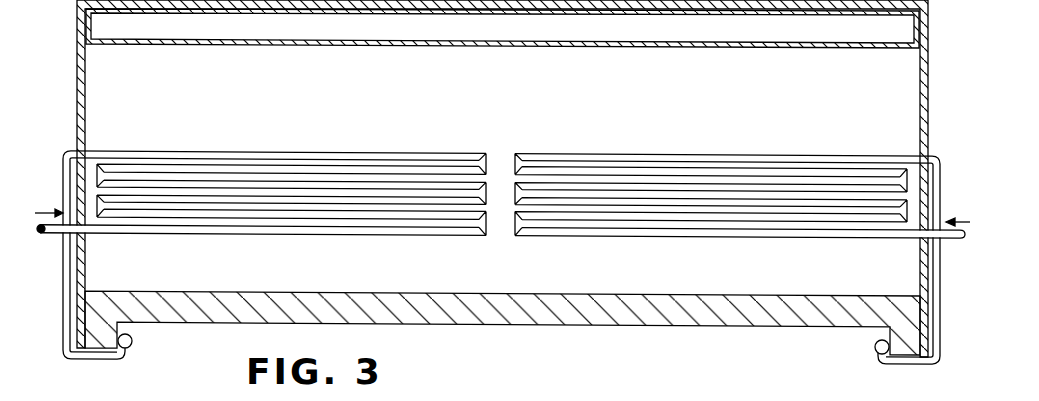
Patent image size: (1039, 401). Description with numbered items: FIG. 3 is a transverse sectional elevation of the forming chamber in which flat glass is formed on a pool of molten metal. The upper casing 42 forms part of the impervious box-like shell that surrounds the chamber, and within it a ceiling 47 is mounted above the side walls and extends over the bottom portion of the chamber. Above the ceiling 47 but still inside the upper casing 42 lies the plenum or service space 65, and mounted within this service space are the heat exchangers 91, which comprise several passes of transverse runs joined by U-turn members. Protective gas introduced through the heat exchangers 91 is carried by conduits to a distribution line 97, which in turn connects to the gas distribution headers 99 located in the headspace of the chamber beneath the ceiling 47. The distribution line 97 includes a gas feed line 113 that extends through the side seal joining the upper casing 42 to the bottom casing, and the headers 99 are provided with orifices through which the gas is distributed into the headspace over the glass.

The upper casing 42 is at (928, 104).
The ceiling 47 is at (780, 327).
The plenum or service space 65 is at (507, 101).
The heat exchangers 91 is at (757, 154).
The distribution line 97 is at (939, 312).
The gas distribution headers 99 is at (132, 341).
The gas feed line 113 is at (920, 366).